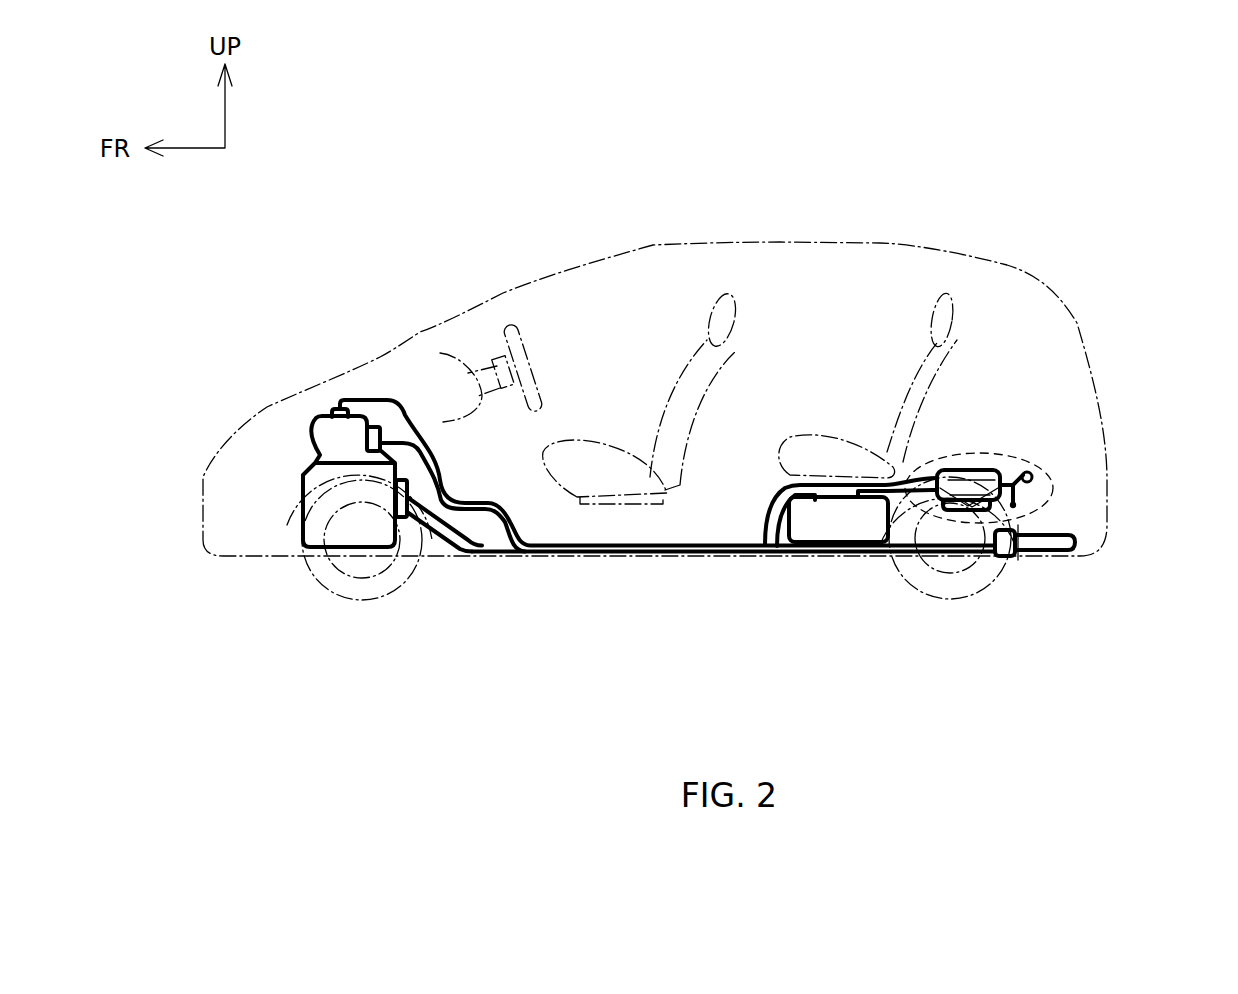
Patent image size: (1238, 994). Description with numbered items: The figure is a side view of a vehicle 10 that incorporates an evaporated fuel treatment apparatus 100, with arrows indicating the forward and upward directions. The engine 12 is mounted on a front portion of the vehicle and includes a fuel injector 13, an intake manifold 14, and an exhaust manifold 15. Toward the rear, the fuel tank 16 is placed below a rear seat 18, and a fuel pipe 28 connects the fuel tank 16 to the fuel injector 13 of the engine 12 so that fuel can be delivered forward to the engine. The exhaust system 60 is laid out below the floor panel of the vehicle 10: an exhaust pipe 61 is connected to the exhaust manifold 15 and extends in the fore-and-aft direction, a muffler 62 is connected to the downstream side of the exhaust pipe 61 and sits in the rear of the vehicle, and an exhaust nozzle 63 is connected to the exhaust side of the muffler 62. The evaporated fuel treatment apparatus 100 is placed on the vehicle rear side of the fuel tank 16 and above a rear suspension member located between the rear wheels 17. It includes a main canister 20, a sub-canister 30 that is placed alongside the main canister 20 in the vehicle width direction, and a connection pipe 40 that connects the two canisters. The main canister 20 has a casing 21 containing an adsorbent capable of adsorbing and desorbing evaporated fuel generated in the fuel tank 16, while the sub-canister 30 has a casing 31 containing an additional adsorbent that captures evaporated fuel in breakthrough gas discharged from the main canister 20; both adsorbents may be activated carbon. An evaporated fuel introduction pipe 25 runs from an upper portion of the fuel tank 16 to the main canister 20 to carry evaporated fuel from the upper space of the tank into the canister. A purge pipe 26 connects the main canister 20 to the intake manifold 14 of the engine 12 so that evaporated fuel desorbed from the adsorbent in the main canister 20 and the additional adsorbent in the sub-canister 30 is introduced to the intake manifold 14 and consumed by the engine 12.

The vehicle 10 is at (978, 262).
The engine 12 is at (302, 484).
The fuel injector 13 is at (376, 428).
The intake manifold 14 is at (340, 409).
The exhaust manifold 15 is at (400, 520).
The fuel tank 16 is at (768, 548).
The rear wheels 17 is at (978, 597).
The rear seat 18 is at (927, 367).
The main canister 20 is at (942, 468).
The casing 21 is at (963, 468).
The evaporated fuel introduction pipe 25 is at (907, 543).
The purge pipe 26 is at (423, 441).
The fuel pipe 28 is at (460, 547).
The sub-canister 30 is at (983, 468).
The casing 31 is at (995, 478).
The connection pipe 40 is at (977, 522).
The exhaust system 60 is at (1019, 567).
The exhaust pipe 61 is at (930, 522).
The muffler 62 is at (1031, 567).
The exhaust nozzle 63 is at (1060, 553).
The evaporated fuel treatment apparatus 100 is at (1045, 474).